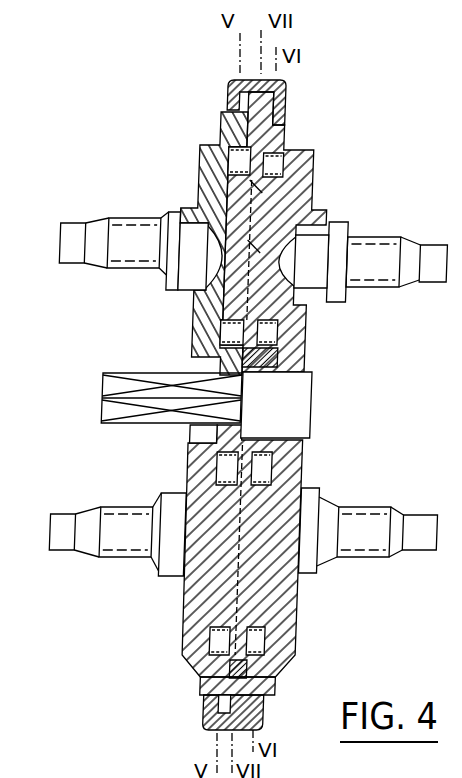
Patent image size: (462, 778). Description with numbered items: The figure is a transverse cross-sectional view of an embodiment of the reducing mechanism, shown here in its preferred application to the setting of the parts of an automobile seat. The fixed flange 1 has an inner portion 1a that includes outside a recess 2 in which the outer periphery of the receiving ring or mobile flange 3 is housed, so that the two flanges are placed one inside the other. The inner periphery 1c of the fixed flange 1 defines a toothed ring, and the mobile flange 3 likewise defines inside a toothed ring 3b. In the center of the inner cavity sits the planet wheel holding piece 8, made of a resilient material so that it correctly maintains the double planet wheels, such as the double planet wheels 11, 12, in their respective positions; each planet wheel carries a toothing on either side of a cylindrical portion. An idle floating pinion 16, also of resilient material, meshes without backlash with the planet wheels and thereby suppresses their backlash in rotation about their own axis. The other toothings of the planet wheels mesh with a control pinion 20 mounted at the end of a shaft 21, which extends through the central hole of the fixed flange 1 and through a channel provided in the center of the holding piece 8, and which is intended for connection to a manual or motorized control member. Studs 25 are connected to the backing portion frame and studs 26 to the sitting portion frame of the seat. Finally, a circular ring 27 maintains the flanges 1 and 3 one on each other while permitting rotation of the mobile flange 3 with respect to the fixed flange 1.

The fixed flange 1 is at (203, 178).
The inner portion of the fixed flange 1a is at (207, 680).
The inner periphery of the fixed flange 1c is at (236, 163).
The recess 2 is at (205, 718).
The mobile flange 3 is at (302, 177).
The toothed ring 3b is at (284, 156).
The planet wheel holding piece 8 is at (268, 356).
The double planet wheel 11 is at (276, 198).
The double planet wheel 12 is at (254, 597).
The idle floating pinion 16 is at (297, 450).
The control pinion 20 is at (191, 452).
The shaft 21 is at (130, 388).
The studs 25 is at (406, 279).
The studs 26 is at (98, 257).
The circular ring 27 is at (230, 94).